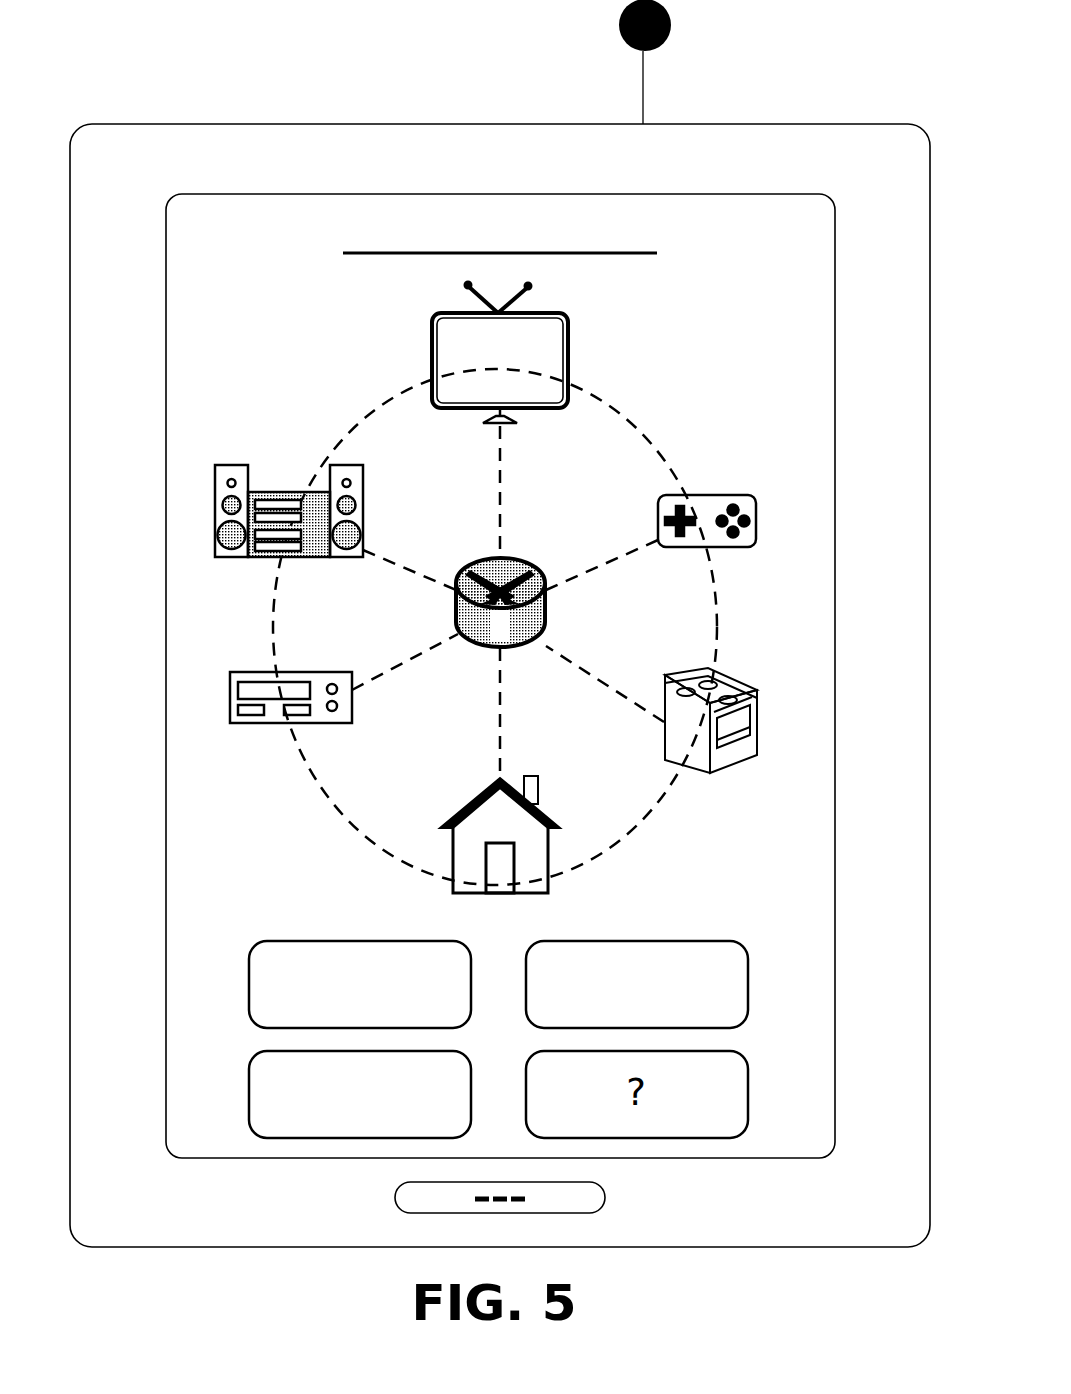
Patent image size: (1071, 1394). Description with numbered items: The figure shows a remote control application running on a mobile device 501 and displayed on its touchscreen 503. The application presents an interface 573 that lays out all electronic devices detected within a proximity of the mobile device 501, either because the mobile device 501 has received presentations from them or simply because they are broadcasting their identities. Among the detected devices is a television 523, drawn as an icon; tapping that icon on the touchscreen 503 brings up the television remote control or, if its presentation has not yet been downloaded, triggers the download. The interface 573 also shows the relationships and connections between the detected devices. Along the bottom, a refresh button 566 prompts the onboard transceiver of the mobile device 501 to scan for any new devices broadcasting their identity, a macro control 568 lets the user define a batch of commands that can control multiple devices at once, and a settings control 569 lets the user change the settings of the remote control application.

The mobile device 501 is at (486, 636).
The touchscreen 503 is at (500, 591).
The interface 573 is at (483, 587).
The television 523 is at (572, 352).
The refresh button 566 is at (336, 963).
The macro button 568 is at (650, 960).
The settings button 569 is at (324, 1079).